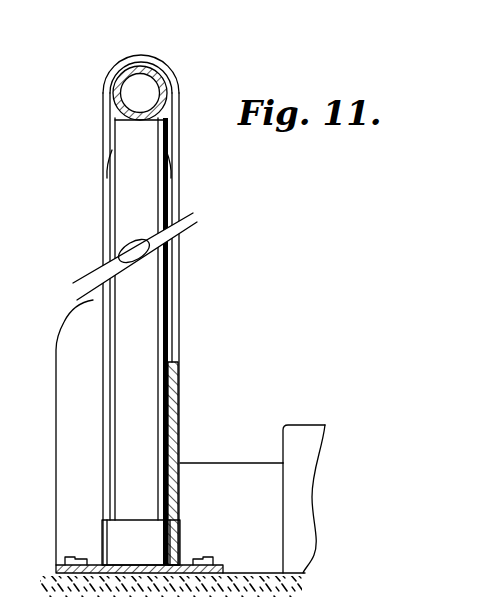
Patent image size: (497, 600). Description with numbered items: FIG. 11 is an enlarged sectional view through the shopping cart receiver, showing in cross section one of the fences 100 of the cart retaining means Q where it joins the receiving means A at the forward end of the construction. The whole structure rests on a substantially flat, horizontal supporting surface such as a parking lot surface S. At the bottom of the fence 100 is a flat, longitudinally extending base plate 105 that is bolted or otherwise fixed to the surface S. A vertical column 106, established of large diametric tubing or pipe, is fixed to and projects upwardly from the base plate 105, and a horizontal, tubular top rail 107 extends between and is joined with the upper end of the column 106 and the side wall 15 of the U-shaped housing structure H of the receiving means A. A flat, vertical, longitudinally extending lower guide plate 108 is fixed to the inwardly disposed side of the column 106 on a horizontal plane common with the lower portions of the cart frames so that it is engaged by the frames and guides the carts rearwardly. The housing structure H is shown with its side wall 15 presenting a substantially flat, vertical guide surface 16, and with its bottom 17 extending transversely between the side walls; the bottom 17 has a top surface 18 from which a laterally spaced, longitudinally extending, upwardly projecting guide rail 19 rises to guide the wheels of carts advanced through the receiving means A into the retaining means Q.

The fence 100 is at (168, 86).
The tubular top rail 107 is at (134, 66).
The vertical column 106 is at (148, 191).
The side wall 15 is at (102, 212).
The guide surface 16 is at (180, 300).
The lower guide plate 108 is at (180, 375).
The base plate 105 is at (190, 564).
The bottom 17 is at (210, 458).
The top surface 18 is at (238, 472).
The guide rail 19 is at (310, 434).
The housing structure H is at (66, 310).
The cart retaining means Q is at (196, 267).
The receiving means A is at (333, 362).
The parking lot surface S is at (258, 566).